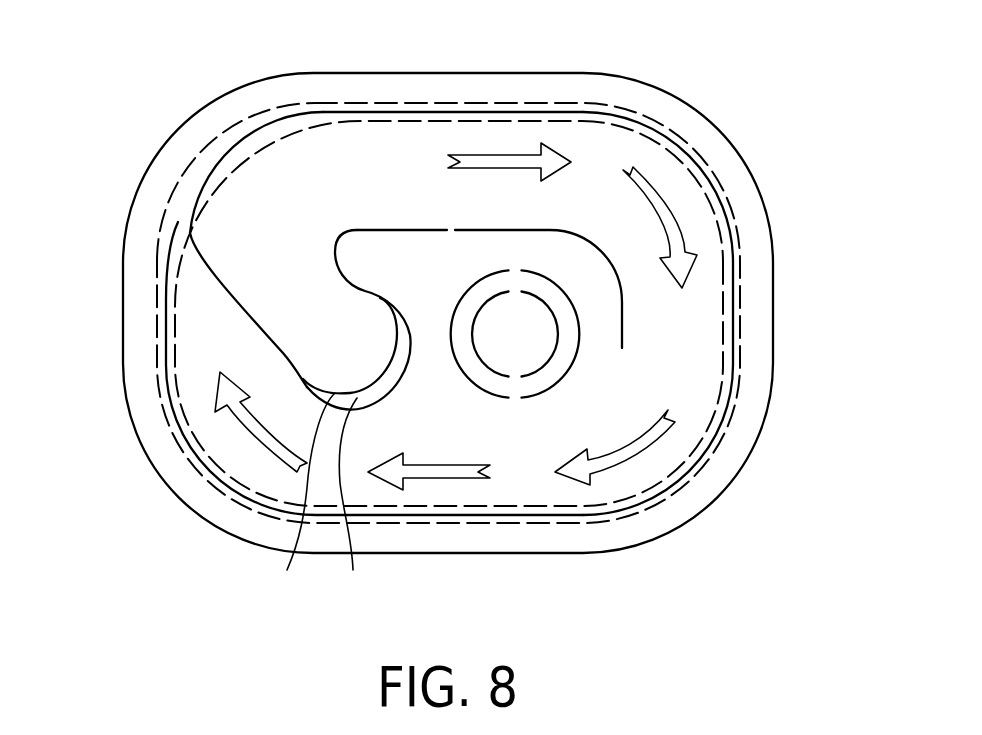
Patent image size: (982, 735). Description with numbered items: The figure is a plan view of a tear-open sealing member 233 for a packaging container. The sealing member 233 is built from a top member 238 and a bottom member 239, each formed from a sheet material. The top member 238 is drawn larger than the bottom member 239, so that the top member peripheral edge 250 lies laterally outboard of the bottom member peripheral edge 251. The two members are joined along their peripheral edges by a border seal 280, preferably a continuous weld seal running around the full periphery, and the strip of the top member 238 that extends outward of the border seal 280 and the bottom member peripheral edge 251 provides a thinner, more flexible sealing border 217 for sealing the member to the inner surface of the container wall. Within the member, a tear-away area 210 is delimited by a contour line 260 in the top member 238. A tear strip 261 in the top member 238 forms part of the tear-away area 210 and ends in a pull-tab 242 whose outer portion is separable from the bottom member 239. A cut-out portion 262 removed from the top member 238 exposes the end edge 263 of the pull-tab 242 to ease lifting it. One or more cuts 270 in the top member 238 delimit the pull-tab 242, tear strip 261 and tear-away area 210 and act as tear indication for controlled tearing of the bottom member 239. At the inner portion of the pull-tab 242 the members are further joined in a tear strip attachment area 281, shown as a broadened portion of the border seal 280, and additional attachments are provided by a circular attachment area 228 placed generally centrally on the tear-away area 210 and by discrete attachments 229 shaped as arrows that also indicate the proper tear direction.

The tear-open sealing member 233 is at (160, 88).
The top member peripheral edge 250 is at (325, 73).
The bottom member peripheral edge 251 is at (397, 101).
The tear strip attachment area 281 is at (248, 116).
The tear strip 261 is at (472, 130).
The sealing border 217 is at (681, 133).
The tear-away area 210 is at (700, 368).
The contour line 260 is at (711, 435).
The top member 238 is at (584, 131).
The bottom member 239 is at (604, 143).
The border seal 280 is at (721, 193).
The cuts 270 is at (247, 315).
The pull-tab 242 is at (340, 350).
The circular attachment area 228 is at (514, 400).
The end edge 263 is at (287, 570).
The cut-out portion 262 is at (353, 570).
The discrete attachments 229 is at (233, 425).